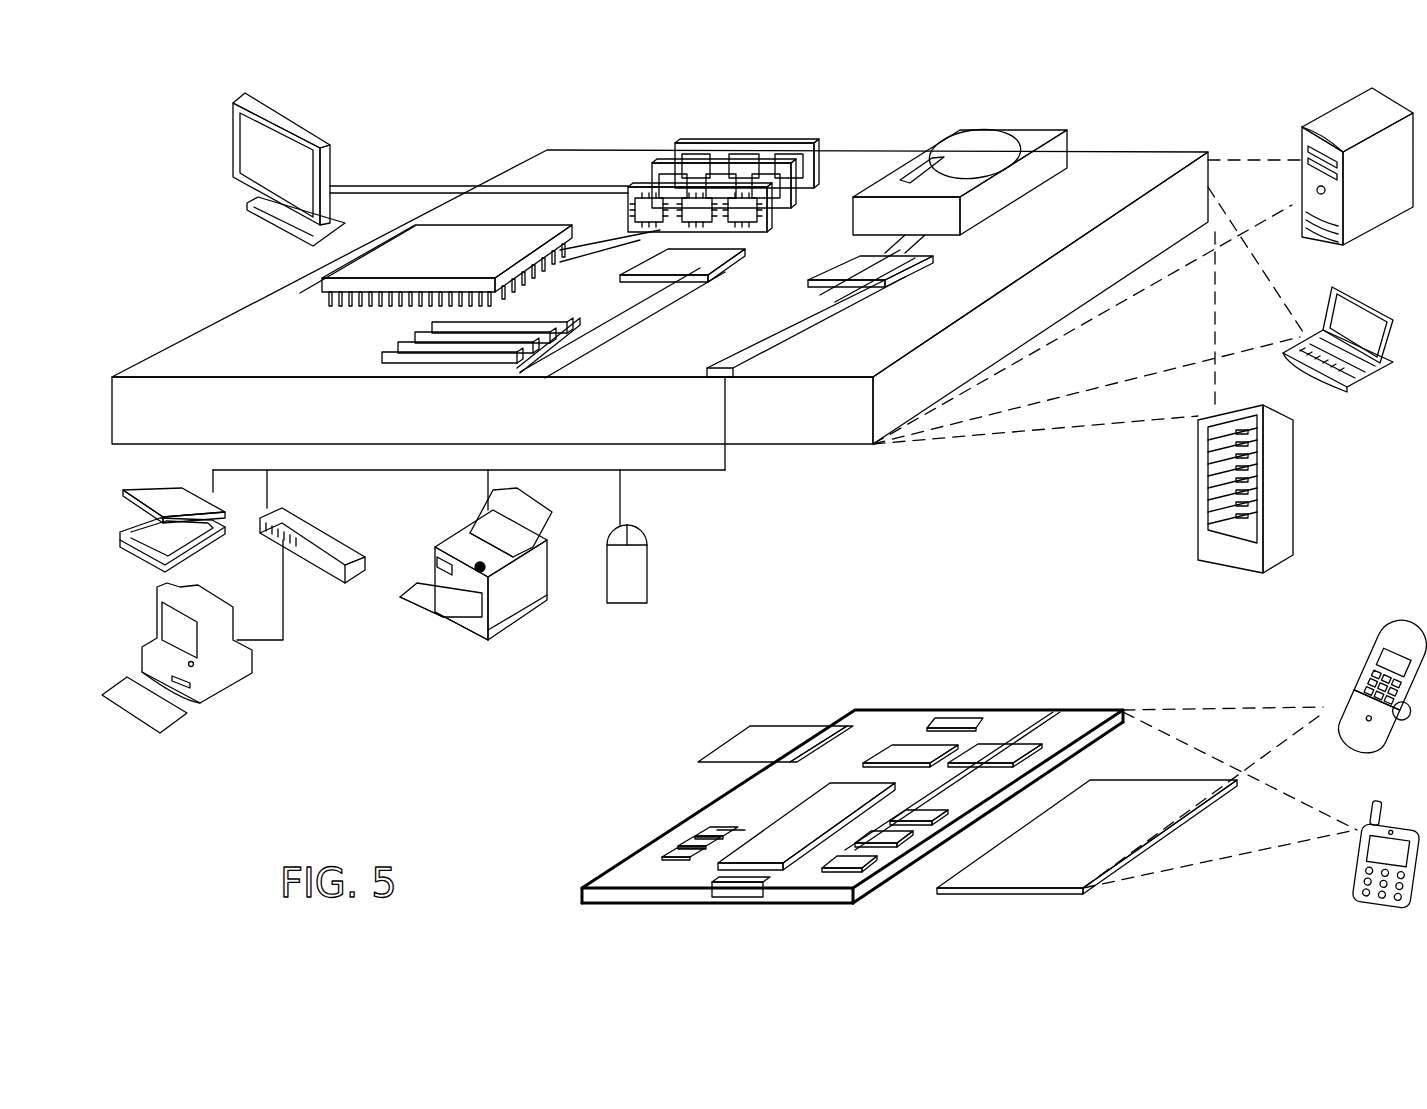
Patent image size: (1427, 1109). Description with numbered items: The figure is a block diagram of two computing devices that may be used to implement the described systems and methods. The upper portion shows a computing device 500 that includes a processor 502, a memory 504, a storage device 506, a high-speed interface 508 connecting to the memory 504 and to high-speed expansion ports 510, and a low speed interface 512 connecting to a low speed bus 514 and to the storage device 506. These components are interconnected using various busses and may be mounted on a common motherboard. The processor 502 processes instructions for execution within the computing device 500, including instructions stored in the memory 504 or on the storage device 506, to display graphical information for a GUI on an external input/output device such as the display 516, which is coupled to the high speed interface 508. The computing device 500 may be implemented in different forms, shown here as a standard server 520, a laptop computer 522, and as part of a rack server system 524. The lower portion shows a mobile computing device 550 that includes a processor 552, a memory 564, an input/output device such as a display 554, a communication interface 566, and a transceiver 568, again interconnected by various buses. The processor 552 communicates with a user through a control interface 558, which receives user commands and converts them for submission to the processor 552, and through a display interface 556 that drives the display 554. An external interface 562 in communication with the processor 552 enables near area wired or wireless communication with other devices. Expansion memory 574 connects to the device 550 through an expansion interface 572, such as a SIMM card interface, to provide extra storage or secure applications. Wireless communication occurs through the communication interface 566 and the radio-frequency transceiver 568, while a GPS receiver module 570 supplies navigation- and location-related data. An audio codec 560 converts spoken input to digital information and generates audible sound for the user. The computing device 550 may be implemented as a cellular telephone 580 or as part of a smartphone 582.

The computing device 500 is at (460, 108).
The processor 502 is at (313, 290).
The memory 504 is at (686, 142).
The storage device 506 is at (945, 128).
The high-speed interface 508 is at (656, 266).
The high-speed expansion ports 510 is at (400, 337).
The low speed interface 512 is at (870, 270).
The low speed bus 514 is at (733, 375).
The display 516 is at (240, 102).
The standard server 520 is at (1300, 136).
The laptop computer 522 is at (1333, 288).
The rack server system 524 is at (1198, 516).
The computing device 550 is at (820, 678).
The processor 552 is at (785, 868).
The display 554 is at (1083, 893).
The display interface 556 is at (860, 875).
The control interface 558 is at (913, 835).
The audio codec 560 is at (920, 822).
The external interface 562 is at (748, 898).
The memory 564 is at (668, 848).
The communication interface 566 is at (910, 752).
The transceiver 568 is at (996, 753).
The GPS receiver module 570 is at (955, 718).
The expansion interface 572 is at (815, 726).
The expansion memory 574 is at (745, 725).
The cellular telephone 580 is at (1375, 645).
The smartphone 582 is at (1365, 798).